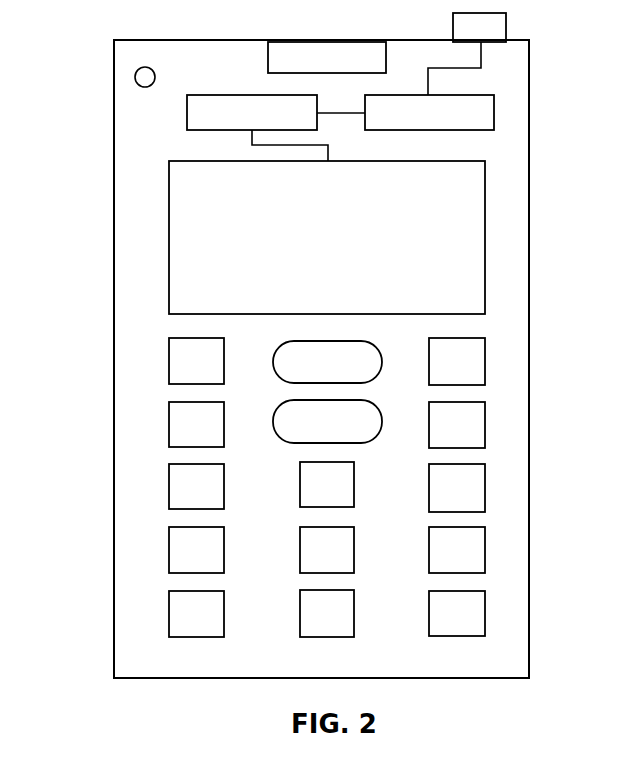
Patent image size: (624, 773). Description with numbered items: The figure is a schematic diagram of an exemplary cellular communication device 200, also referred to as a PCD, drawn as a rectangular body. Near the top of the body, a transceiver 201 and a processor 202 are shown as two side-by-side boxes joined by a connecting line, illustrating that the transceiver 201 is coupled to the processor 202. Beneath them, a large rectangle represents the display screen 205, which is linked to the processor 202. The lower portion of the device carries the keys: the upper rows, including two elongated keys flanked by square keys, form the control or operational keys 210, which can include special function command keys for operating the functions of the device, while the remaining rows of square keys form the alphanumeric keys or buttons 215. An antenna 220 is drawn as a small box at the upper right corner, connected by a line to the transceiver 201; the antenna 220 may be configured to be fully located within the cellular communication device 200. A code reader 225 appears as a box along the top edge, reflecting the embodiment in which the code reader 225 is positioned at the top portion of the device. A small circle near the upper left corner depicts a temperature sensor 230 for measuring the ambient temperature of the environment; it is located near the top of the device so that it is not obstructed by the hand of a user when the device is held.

The cellular communication device 200 is at (286, 359).
The transceiver 201 is at (429, 112).
The processor 202 is at (276, 128).
The display screen 205 is at (327, 237).
The control or operational keys 210 is at (81, 399).
The alphanumeric keys or buttons 215 is at (81, 560).
The antenna 220 is at (506, 27).
The code reader 225 is at (327, 57).
The temperature sensor 230 is at (135, 80).